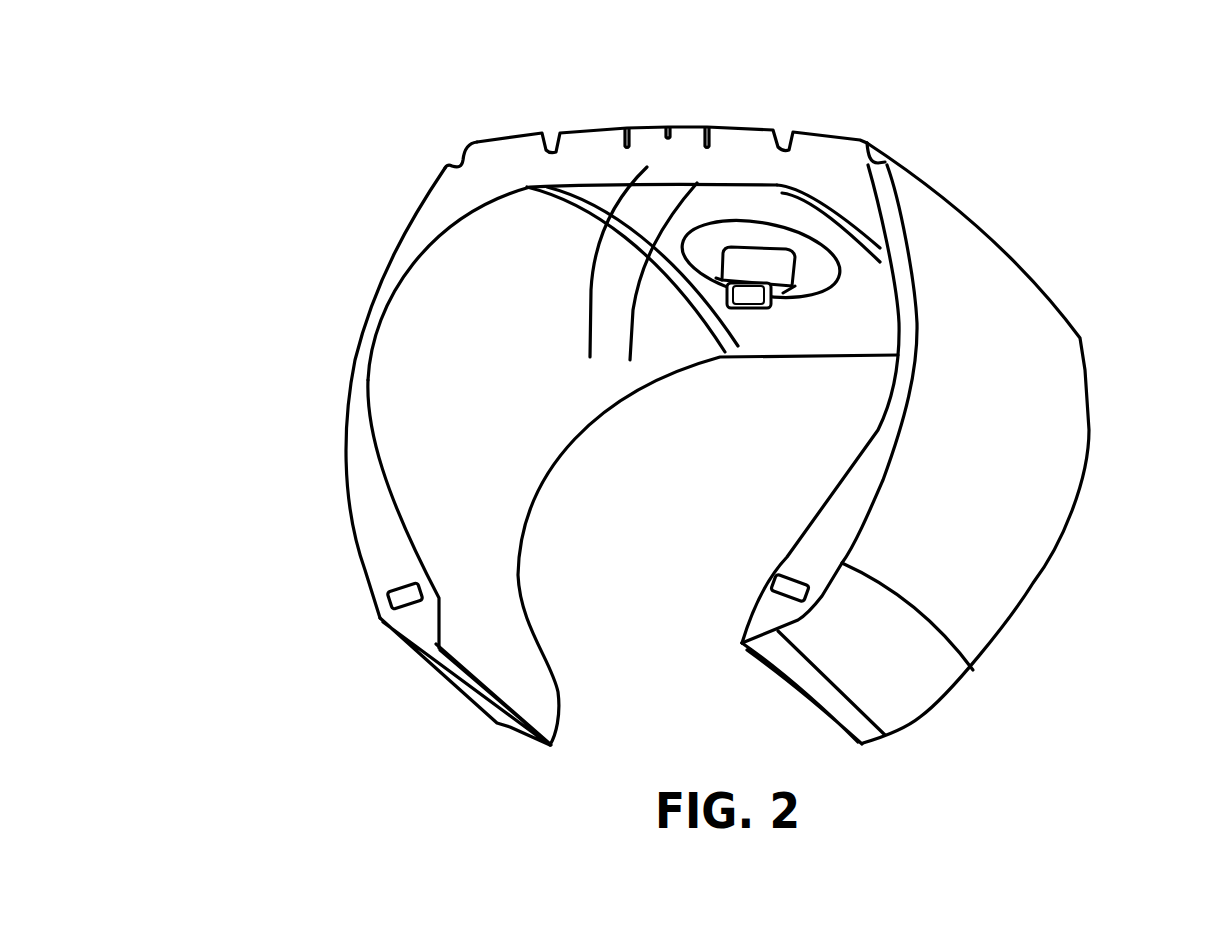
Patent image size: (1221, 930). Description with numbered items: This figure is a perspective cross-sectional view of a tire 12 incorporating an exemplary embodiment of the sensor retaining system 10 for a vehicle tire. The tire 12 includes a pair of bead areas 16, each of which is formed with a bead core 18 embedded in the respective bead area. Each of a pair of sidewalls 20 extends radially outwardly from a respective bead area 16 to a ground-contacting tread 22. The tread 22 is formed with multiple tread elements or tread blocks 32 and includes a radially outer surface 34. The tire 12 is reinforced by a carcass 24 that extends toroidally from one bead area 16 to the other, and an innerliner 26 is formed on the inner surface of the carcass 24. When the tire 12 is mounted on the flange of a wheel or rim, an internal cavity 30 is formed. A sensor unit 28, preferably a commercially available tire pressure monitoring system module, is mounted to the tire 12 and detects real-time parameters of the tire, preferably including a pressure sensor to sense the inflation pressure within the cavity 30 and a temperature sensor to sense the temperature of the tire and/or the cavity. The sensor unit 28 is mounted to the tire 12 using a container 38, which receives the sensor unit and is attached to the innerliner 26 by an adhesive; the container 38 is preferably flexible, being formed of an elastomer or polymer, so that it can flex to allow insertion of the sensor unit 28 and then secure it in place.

The sensor retaining system 10 is at (1030, 118).
The tire 12 is at (1089, 351).
The bead areas 16 is at (383, 558).
The bead core 18 is at (388, 588).
The sidewalls 20 is at (358, 342).
The tread 22 is at (490, 135).
The carcass 24 is at (590, 357).
The innerliner 26 is at (630, 360).
The sensor unit 28 is at (744, 320).
The internal cavity 30 is at (868, 407).
The tread blocks 32 is at (668, 128).
The radially outer surface 34 is at (767, 128).
The container 38 is at (812, 250).